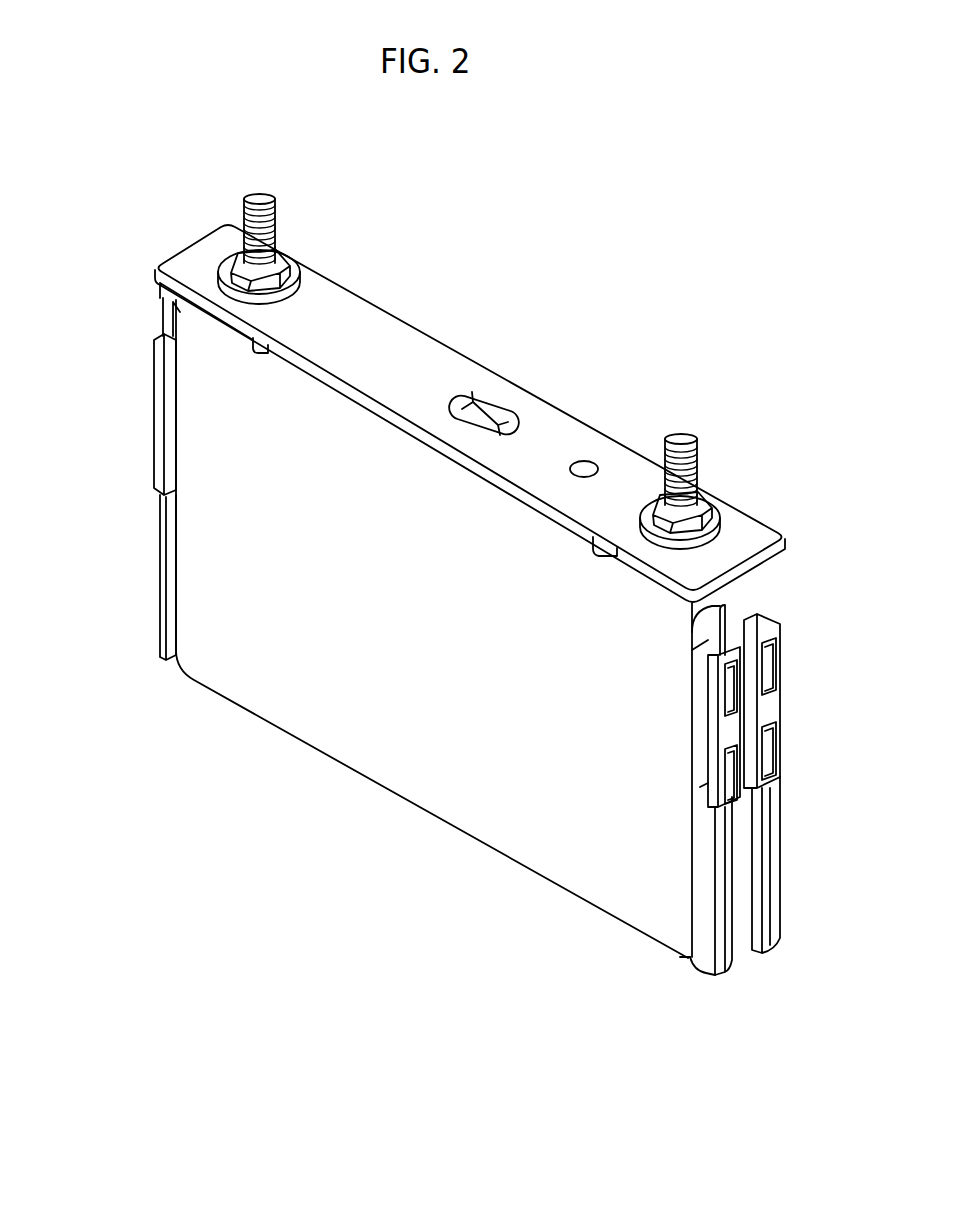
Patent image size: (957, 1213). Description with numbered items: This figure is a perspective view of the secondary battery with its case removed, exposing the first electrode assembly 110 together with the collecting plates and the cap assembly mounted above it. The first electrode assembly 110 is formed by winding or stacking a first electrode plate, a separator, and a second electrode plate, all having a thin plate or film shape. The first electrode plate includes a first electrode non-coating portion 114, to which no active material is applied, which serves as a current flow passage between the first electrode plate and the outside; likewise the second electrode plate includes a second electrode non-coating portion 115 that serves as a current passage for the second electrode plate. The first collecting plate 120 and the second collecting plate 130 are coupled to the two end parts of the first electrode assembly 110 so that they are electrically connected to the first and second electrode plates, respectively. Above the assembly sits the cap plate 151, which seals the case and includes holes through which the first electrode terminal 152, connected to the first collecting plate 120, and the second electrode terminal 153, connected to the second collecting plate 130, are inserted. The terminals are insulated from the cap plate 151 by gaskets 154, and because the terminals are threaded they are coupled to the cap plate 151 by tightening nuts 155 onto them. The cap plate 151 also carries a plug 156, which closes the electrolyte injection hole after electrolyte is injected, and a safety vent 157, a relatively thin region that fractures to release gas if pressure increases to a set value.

The first electrode assembly 110 is at (423, 775).
The first electrode non-coating portion 114 is at (705, 950).
The second electrode non-coating portion 115 is at (175, 582).
The first collecting plate 120 is at (762, 621).
The second collecting plate 130 is at (162, 413).
The cap plate 151 is at (376, 317).
The first electrode terminal 152 is at (685, 440).
The second electrode terminal 153 is at (262, 197).
The gasket 154 is at (717, 517).
The nut 155 is at (703, 499).
The plug 156 is at (586, 465).
The safety vent 157 is at (496, 408).